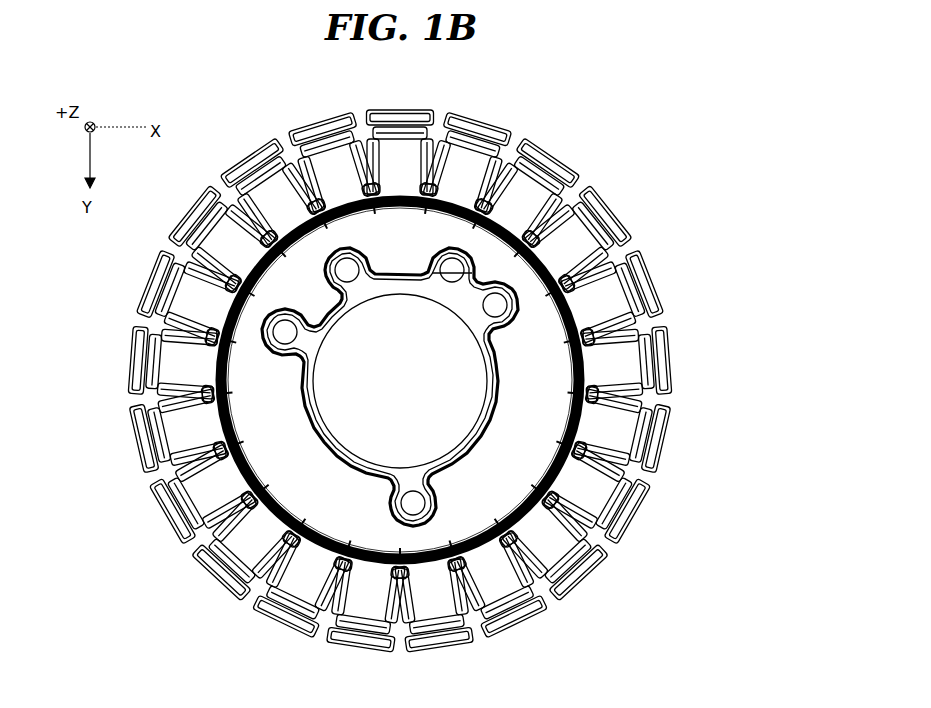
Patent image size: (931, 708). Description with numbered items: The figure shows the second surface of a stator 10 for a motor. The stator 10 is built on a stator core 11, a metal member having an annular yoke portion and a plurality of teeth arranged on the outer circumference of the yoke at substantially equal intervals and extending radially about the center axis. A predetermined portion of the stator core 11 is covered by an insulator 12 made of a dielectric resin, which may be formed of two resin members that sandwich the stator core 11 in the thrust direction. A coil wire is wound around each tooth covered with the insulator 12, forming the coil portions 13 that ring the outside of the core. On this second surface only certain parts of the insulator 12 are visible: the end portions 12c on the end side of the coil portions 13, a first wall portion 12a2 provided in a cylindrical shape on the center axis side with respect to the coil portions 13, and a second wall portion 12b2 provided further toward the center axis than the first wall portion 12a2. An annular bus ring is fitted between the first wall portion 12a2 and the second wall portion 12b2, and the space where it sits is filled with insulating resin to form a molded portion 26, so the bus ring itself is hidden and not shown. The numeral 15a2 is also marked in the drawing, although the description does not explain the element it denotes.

The stator 10 is at (409, 85).
The stator core 11 is at (320, 433).
The insulator 12 is at (441, 381).
The first wall portion 12a2 is at (725, 379).
The second wall portion 12b2 is at (502, 420).
The end portions 12c is at (645, 290).
The coil portion 13 is at (593, 497).
The insulator 15a2 is at (212, 410).
The molded portion 26 is at (297, 483).